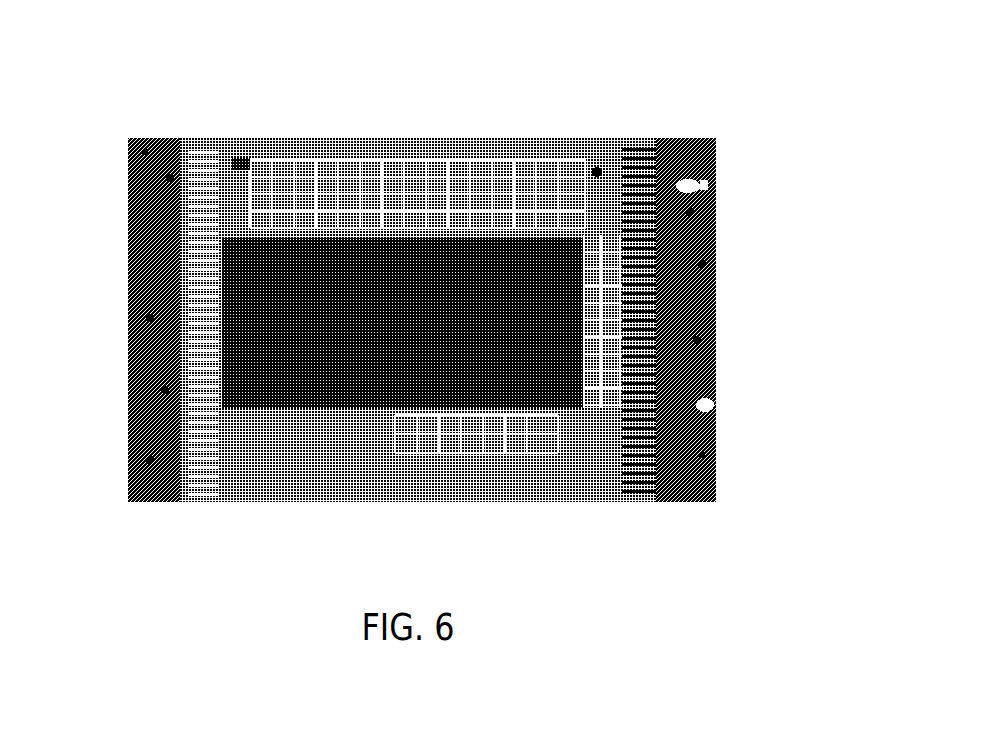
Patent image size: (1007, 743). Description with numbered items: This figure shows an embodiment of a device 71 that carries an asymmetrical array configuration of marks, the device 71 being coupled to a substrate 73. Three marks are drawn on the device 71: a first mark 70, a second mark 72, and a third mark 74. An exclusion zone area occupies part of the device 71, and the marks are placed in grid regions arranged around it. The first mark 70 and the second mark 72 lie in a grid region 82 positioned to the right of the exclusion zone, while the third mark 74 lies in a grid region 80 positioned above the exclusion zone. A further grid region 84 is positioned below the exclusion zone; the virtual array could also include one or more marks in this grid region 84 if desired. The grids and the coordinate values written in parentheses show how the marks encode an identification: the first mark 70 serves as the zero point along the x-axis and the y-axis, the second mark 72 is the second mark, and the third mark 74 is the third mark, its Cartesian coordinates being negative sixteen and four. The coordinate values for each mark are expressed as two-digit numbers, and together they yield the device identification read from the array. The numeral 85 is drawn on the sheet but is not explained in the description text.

The mark 70 is at (613, 262).
The device 71 is at (597, 160).
The mark 72 is at (615, 355).
The substrate 73 is at (686, 152).
The mark 74 is at (283, 172).
The grid region 80 is at (250, 163).
The grid region 82 is at (620, 393).
The grid region 84 is at (557, 443).
The connector strip 85 is at (225, 325).